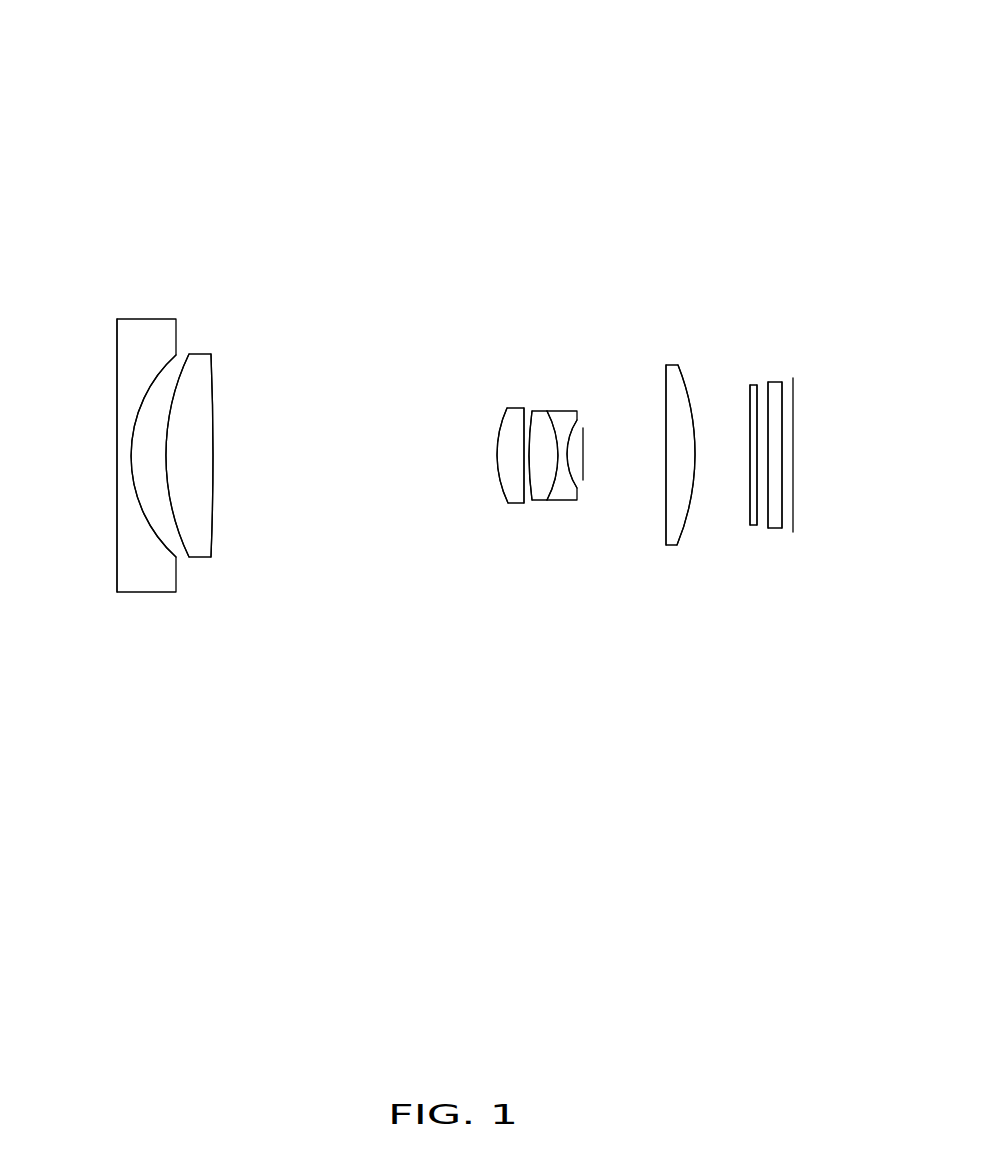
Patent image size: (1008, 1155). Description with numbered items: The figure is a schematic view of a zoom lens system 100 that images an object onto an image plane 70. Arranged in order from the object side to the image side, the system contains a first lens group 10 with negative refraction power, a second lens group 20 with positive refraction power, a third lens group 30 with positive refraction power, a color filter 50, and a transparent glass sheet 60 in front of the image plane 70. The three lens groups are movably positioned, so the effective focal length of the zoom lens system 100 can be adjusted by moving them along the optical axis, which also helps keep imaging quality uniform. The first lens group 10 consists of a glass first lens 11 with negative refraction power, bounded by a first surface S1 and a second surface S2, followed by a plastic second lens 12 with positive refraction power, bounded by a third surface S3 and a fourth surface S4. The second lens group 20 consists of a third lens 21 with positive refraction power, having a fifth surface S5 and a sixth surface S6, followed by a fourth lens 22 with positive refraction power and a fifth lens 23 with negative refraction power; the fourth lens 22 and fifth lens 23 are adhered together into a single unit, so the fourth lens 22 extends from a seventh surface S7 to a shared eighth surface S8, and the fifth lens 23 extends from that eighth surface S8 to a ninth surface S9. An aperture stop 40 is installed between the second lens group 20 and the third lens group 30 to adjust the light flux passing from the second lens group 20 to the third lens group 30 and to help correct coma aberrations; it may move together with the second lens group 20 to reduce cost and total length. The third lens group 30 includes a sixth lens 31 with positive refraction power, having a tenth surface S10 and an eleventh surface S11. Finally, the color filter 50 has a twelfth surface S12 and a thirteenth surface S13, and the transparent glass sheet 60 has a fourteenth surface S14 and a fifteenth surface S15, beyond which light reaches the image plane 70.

The zoom lens system 100 is at (355, 104).
The first lens group 10 is at (225, 252).
The first lens 11 is at (148, 332).
The second lens 12 is at (203, 363).
The second lens group 20 is at (597, 343).
The third lens 21 is at (515, 413).
The fourth lens 22 is at (540, 415).
The fifth lens 23 is at (562, 417).
The third lens group 30 is at (668, 351).
The sixth lens 31 is at (675, 378).
The aperture stop 40 is at (584, 452).
The color filter 50 is at (753, 385).
The transparent glass sheet 60 is at (775, 382).
The image plane 70 is at (793, 420).
The first surface S1 is at (118, 512).
The second surface S2 is at (153, 525).
The third surface S3 is at (172, 408).
The fourth surface S4 is at (210, 398).
The fifth surface S5 is at (496, 457).
The sixth surface S6 is at (525, 487).
The seventh surface S7 is at (527, 475).
The eighth surface S8 is at (553, 478).
The ninth surface S9 is at (571, 470).
The tenth surface S10 is at (667, 520).
The eleventh surface S11 is at (687, 522).
The twelfth surface S12 is at (750, 468).
The thirteenth surface S13 is at (758, 498).
The fourteenth surface S14 is at (770, 436).
The fifteenth surface S15 is at (782, 475).